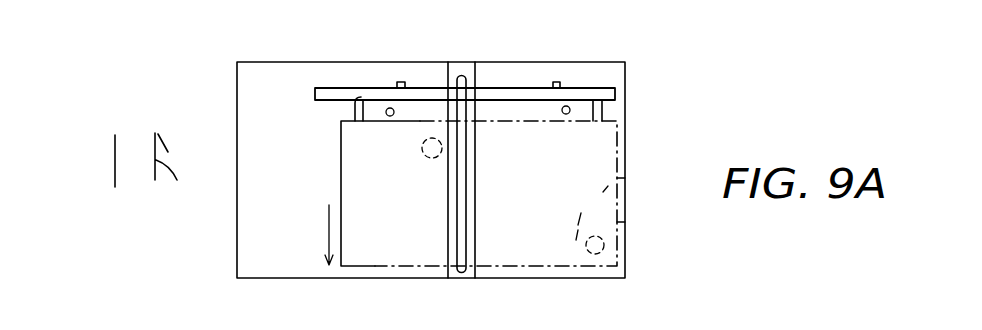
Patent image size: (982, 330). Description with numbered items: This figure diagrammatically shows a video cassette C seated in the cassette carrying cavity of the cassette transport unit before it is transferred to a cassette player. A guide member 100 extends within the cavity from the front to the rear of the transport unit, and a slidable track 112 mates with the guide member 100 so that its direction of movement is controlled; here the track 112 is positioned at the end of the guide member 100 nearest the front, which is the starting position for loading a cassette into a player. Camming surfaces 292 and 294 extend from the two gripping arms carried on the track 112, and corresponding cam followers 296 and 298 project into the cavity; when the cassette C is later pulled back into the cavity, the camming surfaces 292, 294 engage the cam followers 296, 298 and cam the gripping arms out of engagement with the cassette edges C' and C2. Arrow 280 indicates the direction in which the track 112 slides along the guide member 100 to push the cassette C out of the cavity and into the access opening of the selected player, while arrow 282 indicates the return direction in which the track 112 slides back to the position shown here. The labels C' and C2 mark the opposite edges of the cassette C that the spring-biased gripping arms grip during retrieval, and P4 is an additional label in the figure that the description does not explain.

The guide member 100 is at (468, 63).
The slidable track 112 is at (320, 88).
The camming surface 292 is at (402, 82).
The camming surface 294 is at (556, 82).
The cam follower 296 is at (390, 116).
The cam follower 298 is at (565, 114).
The arrow 280 is at (113, 163).
The arrow 282 is at (184, 176).
The passage P4 is at (315, 98).
The video cassette C is at (652, 163).
The edge of video cassette C' is at (656, 224).
The edge of video cassette C2 is at (341, 153).